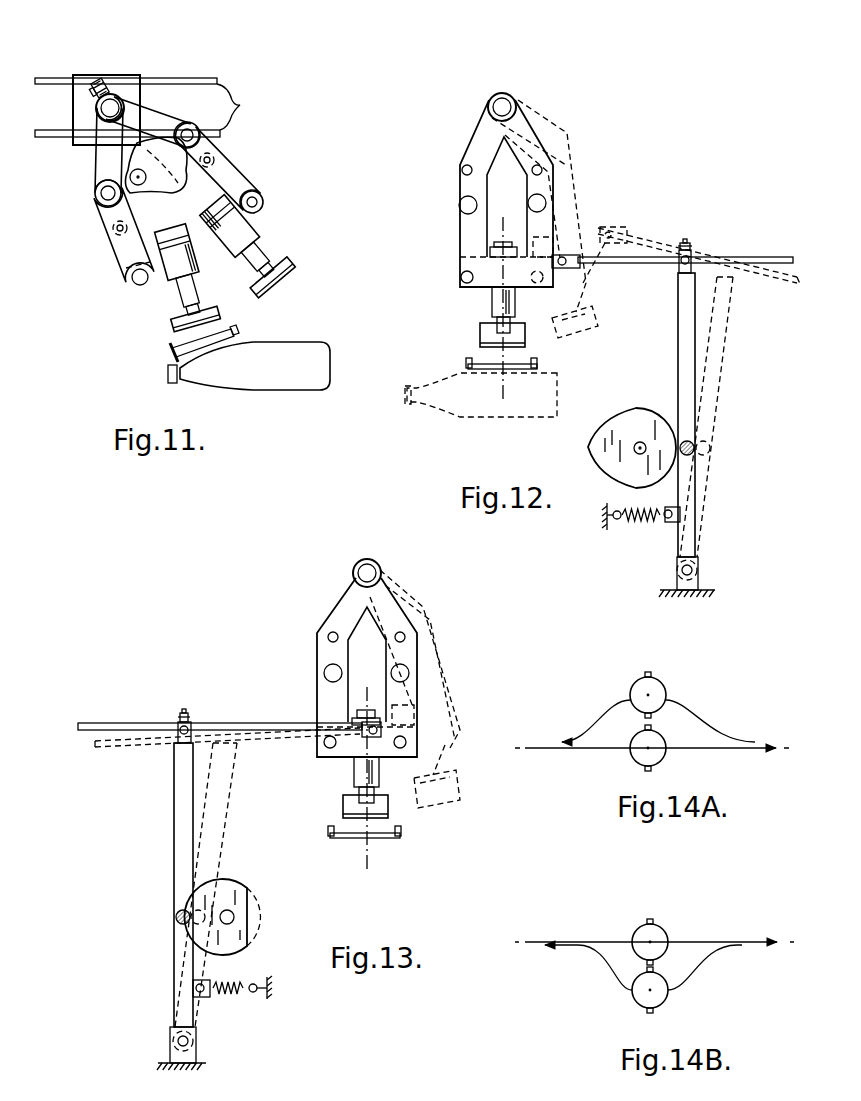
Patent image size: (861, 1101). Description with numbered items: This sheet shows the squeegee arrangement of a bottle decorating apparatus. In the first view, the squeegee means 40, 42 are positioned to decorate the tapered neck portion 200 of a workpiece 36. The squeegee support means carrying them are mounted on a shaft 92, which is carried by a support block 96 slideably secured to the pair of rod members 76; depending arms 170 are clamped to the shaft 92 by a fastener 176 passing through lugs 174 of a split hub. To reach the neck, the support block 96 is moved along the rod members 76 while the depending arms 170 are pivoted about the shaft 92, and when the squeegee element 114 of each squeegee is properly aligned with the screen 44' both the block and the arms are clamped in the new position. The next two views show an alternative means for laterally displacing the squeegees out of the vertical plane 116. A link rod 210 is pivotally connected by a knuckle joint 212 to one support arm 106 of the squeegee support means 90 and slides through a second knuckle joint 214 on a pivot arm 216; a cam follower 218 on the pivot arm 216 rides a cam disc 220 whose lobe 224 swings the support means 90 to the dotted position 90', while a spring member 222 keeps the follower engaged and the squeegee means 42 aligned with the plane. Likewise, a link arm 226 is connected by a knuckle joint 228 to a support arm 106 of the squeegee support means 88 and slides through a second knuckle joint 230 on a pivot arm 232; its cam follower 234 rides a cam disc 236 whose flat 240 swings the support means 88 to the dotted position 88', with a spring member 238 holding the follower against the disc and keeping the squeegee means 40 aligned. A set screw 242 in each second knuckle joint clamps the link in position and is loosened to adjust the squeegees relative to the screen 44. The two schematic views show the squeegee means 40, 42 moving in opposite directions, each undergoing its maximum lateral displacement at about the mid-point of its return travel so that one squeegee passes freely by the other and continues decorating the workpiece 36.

In FIG. 11, the workpiece 36 is at (290, 342).
In FIG. 11, the squeegee means 40 is at (260, 247).
In FIG. 13, the squeegee means 40 is at (356, 775).
In FIG. 14A, the squeegee means 40 is at (658, 756).
In FIG. 14B, the squeegee means 40 is at (658, 998).
In FIG. 11, the squeegee means 42 is at (177, 297).
In FIG. 12, the squeegee means 42 is at (492, 306).
In FIG. 14A, the squeegee means 42 is at (657, 684).
In FIG. 14B, the squeegee means 42 is at (657, 930).
In FIG. 12, the screen 44 is at (527, 367).
In FIG. 13, the screen 44 is at (355, 847).
In FIG. 11, the screen 44' is at (228, 330).
In FIG. 11, the rod members 76 is at (148, 107).
In FIG. 12, the squeegee support means 88 is at (479, 193).
In FIG. 13, the squeegee support means 88 is at (425, 662).
In FIG. 13, the squeegee support means in displaced position 88' is at (448, 689).
In FIG. 12, the squeegee support means 90 is at (548, 184).
In FIG. 13, the squeegee support means 90 is at (342, 667).
In FIG. 12, the squeegee support means in displaced position 90' is at (579, 219).
In FIG. 11, the shaft 92 is at (98, 107).
In FIG. 12, the shaft 92 is at (510, 100).
In FIG. 13, the shaft 92 is at (360, 567).
In FIG. 11, the support block 96 is at (128, 82).
In FIG. 12, the support arm 106 is at (552, 198).
In FIG. 11, the squeegee element 114 is at (247, 289).
In FIG. 12, the vertical plane 116 is at (503, 380).
In FIG. 13, the vertical plane 116 is at (368, 850).
In FIG. 11, the depending arm 170 is at (127, 155).
In FIG. 11, the lug 174 is at (97, 80).
In FIG. 11, the fastener 176 is at (106, 80).
In FIG. 11, the tapered neck portion 200 is at (200, 373).
In FIG. 12, the link rod 210 is at (767, 257).
In FIG. 12, the knuckle joint 212 is at (580, 265).
In FIG. 12, the second knuckle joint 214 is at (697, 249).
In FIG. 12, the pivot arm 216 is at (692, 503).
In FIG. 12, the cam follower 218 is at (693, 445).
In FIG. 12, the cam disc 220 is at (648, 415).
In FIG. 12, the spring member 222 is at (648, 526).
In FIG. 12, the lobe 224 is at (587, 448).
In FIG. 13, the link arm 226 is at (118, 724).
In FIG. 13, the knuckle joint 228 is at (366, 742).
In FIG. 13, the second knuckle joint 230 is at (195, 723).
In FIG. 13, the pivot arm 232 is at (177, 833).
In FIG. 13, the cam follower 234 is at (177, 917).
In FIG. 13, the cam disc 236 is at (228, 890).
In FIG. 13, the spring member 238 is at (231, 996).
In FIG. 13, the flat 240 is at (255, 917).
In FIG. 12, the set screw 242 is at (685, 243).
In FIG. 13, the set screw 242 is at (185, 713).